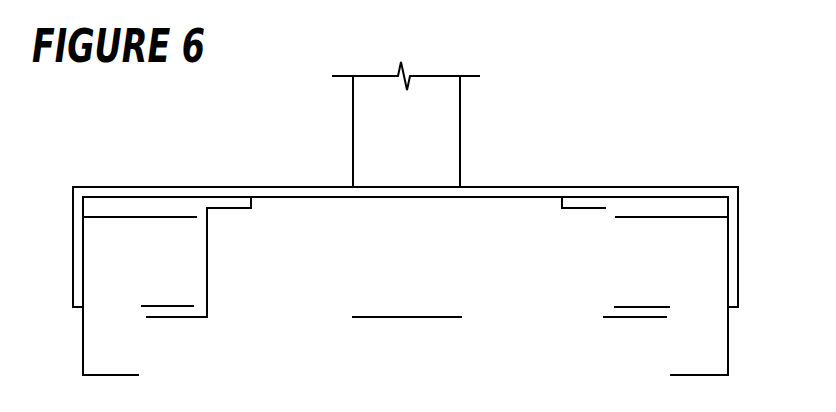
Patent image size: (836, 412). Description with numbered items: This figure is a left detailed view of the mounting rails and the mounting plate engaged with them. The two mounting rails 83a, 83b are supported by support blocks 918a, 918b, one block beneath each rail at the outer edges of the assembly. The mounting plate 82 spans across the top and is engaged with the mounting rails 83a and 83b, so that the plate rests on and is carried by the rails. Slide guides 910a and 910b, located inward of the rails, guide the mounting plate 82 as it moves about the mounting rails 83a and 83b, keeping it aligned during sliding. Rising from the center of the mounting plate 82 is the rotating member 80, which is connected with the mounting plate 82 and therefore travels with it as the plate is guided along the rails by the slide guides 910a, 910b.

The rotating member 80 is at (461, 131).
The mounting plate 82 is at (292, 186).
The mounting rail 83a is at (78, 206).
The mounting rail 83b is at (730, 208).
The slide guide 910a is at (177, 322).
The slide guide 910b is at (634, 320).
The support block 918a is at (82, 338).
The support block 918b is at (730, 338).